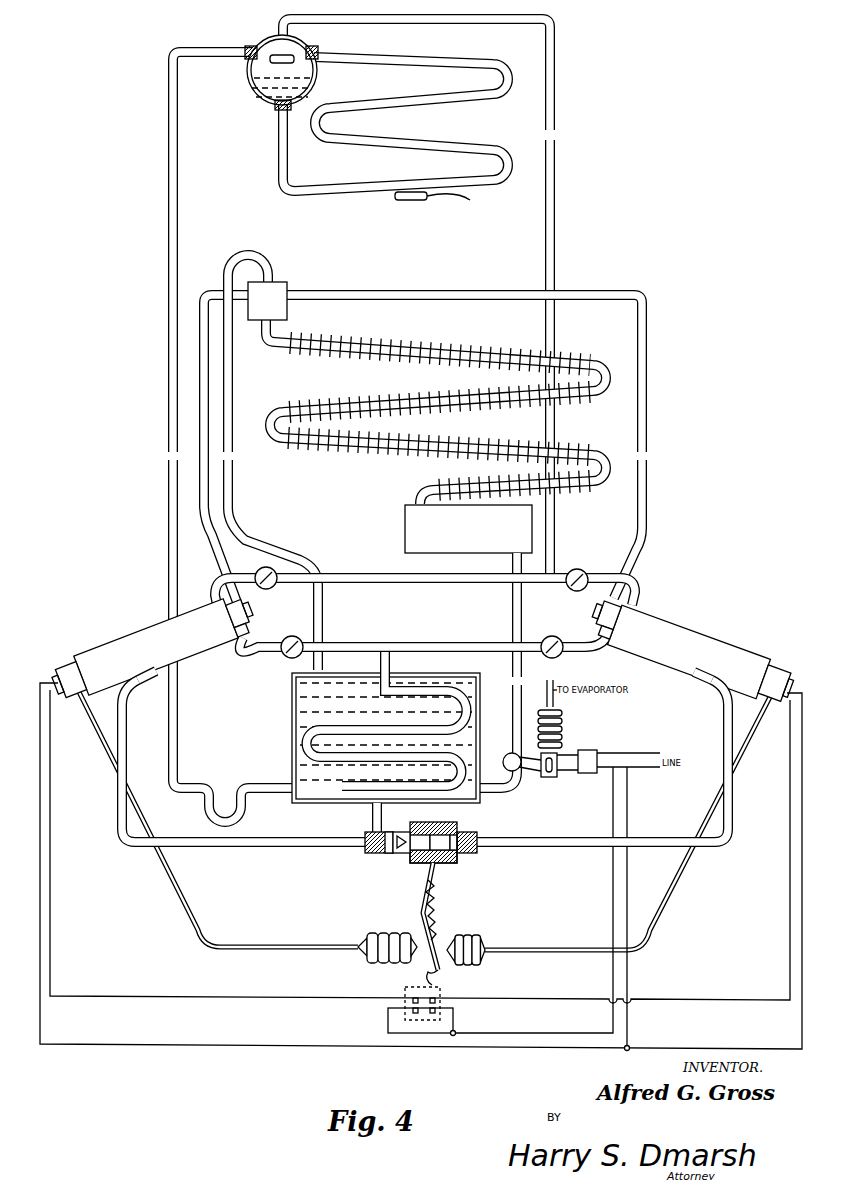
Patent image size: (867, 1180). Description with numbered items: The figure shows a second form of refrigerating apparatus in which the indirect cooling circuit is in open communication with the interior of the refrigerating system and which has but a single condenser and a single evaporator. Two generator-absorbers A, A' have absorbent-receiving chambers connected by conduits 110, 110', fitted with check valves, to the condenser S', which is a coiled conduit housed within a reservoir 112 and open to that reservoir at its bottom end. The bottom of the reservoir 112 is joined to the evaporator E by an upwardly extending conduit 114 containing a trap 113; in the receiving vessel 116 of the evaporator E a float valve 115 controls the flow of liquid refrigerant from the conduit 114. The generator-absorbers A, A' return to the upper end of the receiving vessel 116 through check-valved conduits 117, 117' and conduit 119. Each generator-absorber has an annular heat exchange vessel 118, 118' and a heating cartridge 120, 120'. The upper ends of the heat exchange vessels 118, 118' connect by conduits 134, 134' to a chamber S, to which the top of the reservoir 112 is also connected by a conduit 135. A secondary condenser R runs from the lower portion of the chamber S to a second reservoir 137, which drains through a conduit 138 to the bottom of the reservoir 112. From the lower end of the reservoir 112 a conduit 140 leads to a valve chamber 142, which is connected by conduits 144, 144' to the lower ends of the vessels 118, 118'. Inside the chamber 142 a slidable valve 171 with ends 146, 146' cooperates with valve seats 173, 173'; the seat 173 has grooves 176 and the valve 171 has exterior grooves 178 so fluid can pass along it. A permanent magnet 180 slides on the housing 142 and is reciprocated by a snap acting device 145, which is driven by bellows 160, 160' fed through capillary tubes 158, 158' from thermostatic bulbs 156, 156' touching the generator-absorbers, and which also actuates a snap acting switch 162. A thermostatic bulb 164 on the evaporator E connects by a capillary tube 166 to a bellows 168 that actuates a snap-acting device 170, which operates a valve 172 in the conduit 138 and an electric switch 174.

The float valve 115 is at (278, 34).
The receiving vessel 116 is at (305, 45).
The evaporator E is at (428, 142).
The conduit 119 is at (555, 157).
The thermostatic bulb 164 is at (408, 201).
The capillary tube 166 is at (472, 200).
The conduit 134 is at (305, 436).
The conduit 134' is at (556, 446).
The chamber S is at (278, 285).
The upwardly extending conduit 114 is at (168, 427).
The conduit 135 is at (233, 478).
The secondary condenser R is at (335, 440).
The second reservoir 137 is at (405, 522).
The conduit 138 is at (512, 612).
The conduit 117 is at (322, 579).
The conduit 117' is at (532, 574).
The conduit 110 is at (335, 640).
The conduit 110' is at (514, 641).
The heating cartridge 120 is at (255, 612).
The heating cartridge 120' is at (588, 614).
The annular heat exchange vessel 118 is at (256, 632).
The annular heat exchange vessel 118' is at (586, 633).
The generator-absorber A is at (143, 652).
The generator-absorber A' is at (703, 656).
The thermostatic bulb 156 is at (144, 691).
The thermostatic bulb 156' is at (687, 694).
The capillary tube 158 is at (143, 720).
The capillary tube 158' is at (700, 720).
The conduit 144 is at (243, 801).
The conduit 144' is at (602, 801).
The reservoir 112 is at (292, 706).
The condenser S' is at (359, 719).
The trap 113 is at (246, 815).
The conduit 140 is at (372, 815).
The valve 172 is at (508, 756).
The bellows 168 is at (563, 723).
The snap-acting device 170 is at (556, 777).
The electric switch 174 is at (590, 750).
The valve chamber 142 is at (470, 860).
The permanent magnet 180 is at (455, 862).
The slidable valve 171 is at (418, 835).
The grooves 178 is at (432, 835).
The valve end 146 is at (395, 859).
The valve end 146' is at (462, 829).
The valve seat 173 is at (358, 838).
The valve seat 173' is at (485, 833).
The grooves 176 is at (386, 855).
The snap acting device 145 is at (424, 901).
The bellows 160 is at (374, 938).
The bellows 160' is at (479, 938).
The snap acting switch 162 is at (440, 991).